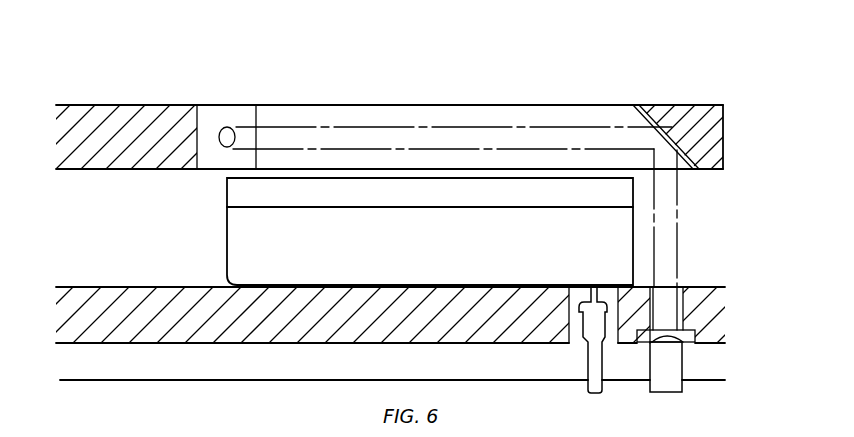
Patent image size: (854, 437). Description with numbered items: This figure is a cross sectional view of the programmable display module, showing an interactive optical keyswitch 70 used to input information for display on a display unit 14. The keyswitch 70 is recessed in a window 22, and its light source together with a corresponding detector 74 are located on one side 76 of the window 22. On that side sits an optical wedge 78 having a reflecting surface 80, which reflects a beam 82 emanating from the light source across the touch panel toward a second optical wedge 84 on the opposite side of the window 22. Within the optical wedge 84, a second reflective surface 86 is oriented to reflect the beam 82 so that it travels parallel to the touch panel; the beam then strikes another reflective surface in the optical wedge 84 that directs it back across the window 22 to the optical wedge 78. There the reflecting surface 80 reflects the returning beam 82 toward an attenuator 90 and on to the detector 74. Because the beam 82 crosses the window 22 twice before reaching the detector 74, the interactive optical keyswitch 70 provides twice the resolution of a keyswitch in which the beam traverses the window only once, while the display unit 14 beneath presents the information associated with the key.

The display unit 14 is at (218, 246).
The window 22 is at (300, 98).
The interactive optical keyswitch 70 is at (569, 96).
The detector 74 is at (700, 340).
The side 76 is at (686, 96).
The optical wedge 78 is at (723, 126).
The reflecting surface 80 is at (688, 166).
The beam 82 is at (678, 222).
The optical wedge 84 is at (128, 105).
The second reflective surface 86 is at (222, 105).
The attenuator 90 is at (683, 304).